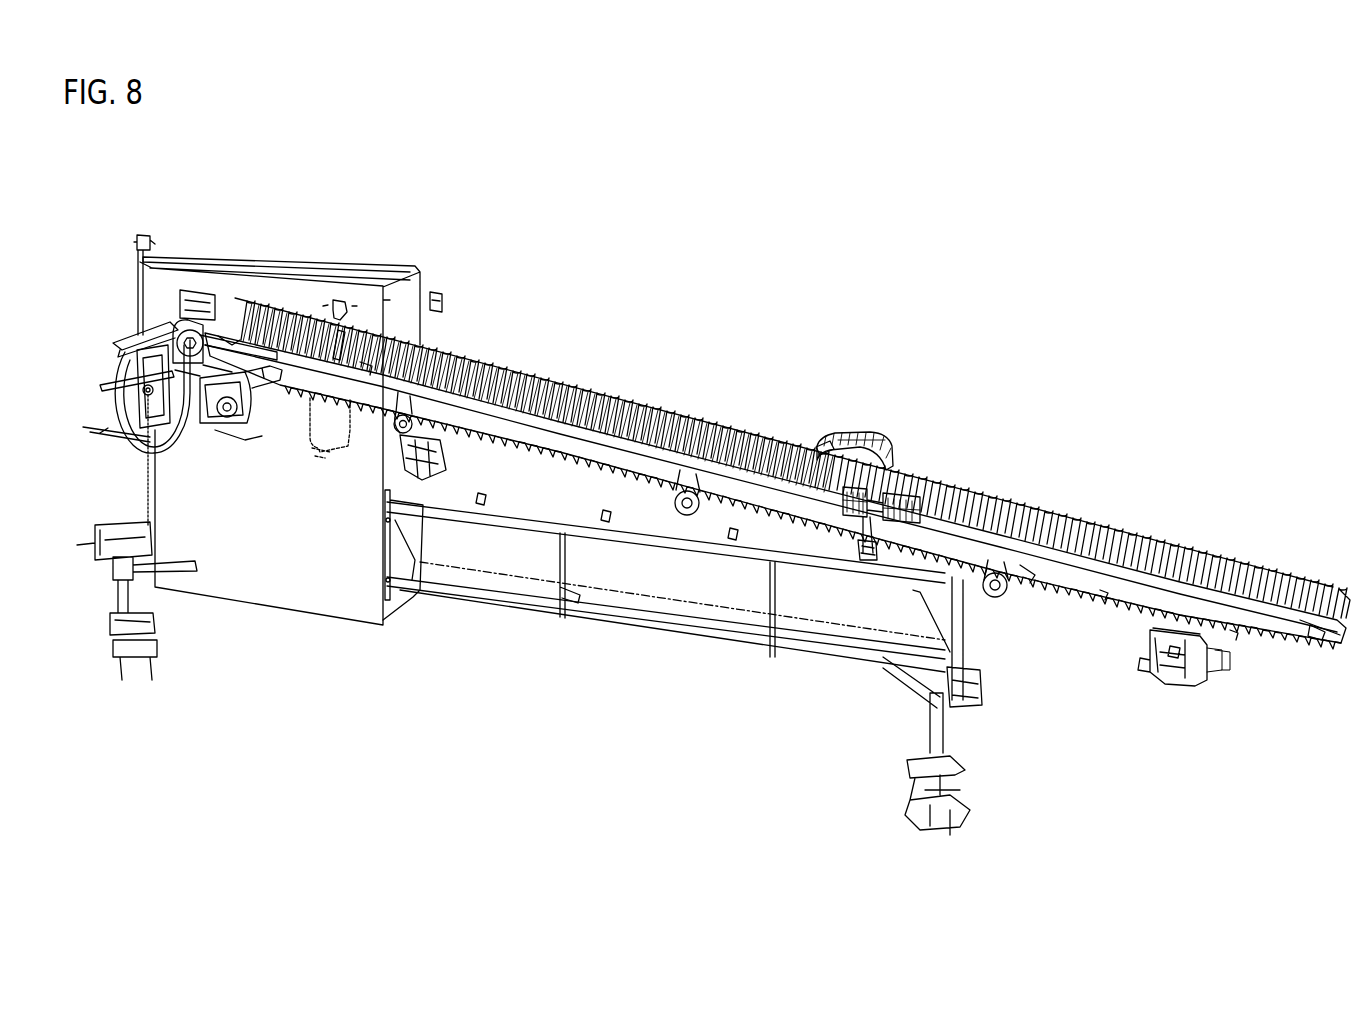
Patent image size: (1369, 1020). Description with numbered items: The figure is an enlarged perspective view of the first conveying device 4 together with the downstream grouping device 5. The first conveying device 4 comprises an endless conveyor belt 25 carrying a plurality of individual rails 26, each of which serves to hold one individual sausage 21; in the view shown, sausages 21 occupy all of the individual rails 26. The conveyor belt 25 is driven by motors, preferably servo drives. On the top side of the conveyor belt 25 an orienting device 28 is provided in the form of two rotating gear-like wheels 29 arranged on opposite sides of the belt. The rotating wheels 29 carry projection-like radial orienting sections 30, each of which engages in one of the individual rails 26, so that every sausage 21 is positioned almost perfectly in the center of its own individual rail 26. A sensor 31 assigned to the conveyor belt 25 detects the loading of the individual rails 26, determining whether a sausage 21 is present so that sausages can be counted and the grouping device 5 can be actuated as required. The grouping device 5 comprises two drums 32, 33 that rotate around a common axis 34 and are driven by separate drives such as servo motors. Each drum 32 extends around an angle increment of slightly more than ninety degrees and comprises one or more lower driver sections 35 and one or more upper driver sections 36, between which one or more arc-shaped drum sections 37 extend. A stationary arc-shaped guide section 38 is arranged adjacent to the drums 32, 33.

The first conveying device 4 is at (751, 343).
The grouping device 5 is at (238, 226).
The sausages 21 is at (1165, 546).
The conveyor belt 25 is at (1056, 575).
The individual rails 26 is at (1135, 605).
The orienting device 28 is at (867, 414).
The rotating gear-like wheels 29 is at (882, 458).
The radial orienting sections 30 is at (822, 446).
The sensor 31 is at (343, 305).
The drum 32 is at (153, 330).
The drum 33 is at (110, 398).
The common axis 34 is at (146, 395).
The lower driver sections 35 is at (108, 384).
The upper driver sections 36 is at (148, 340).
The arc-shaped drum sections 37 is at (165, 328).
The arc-shaped guide section 38 is at (187, 433).